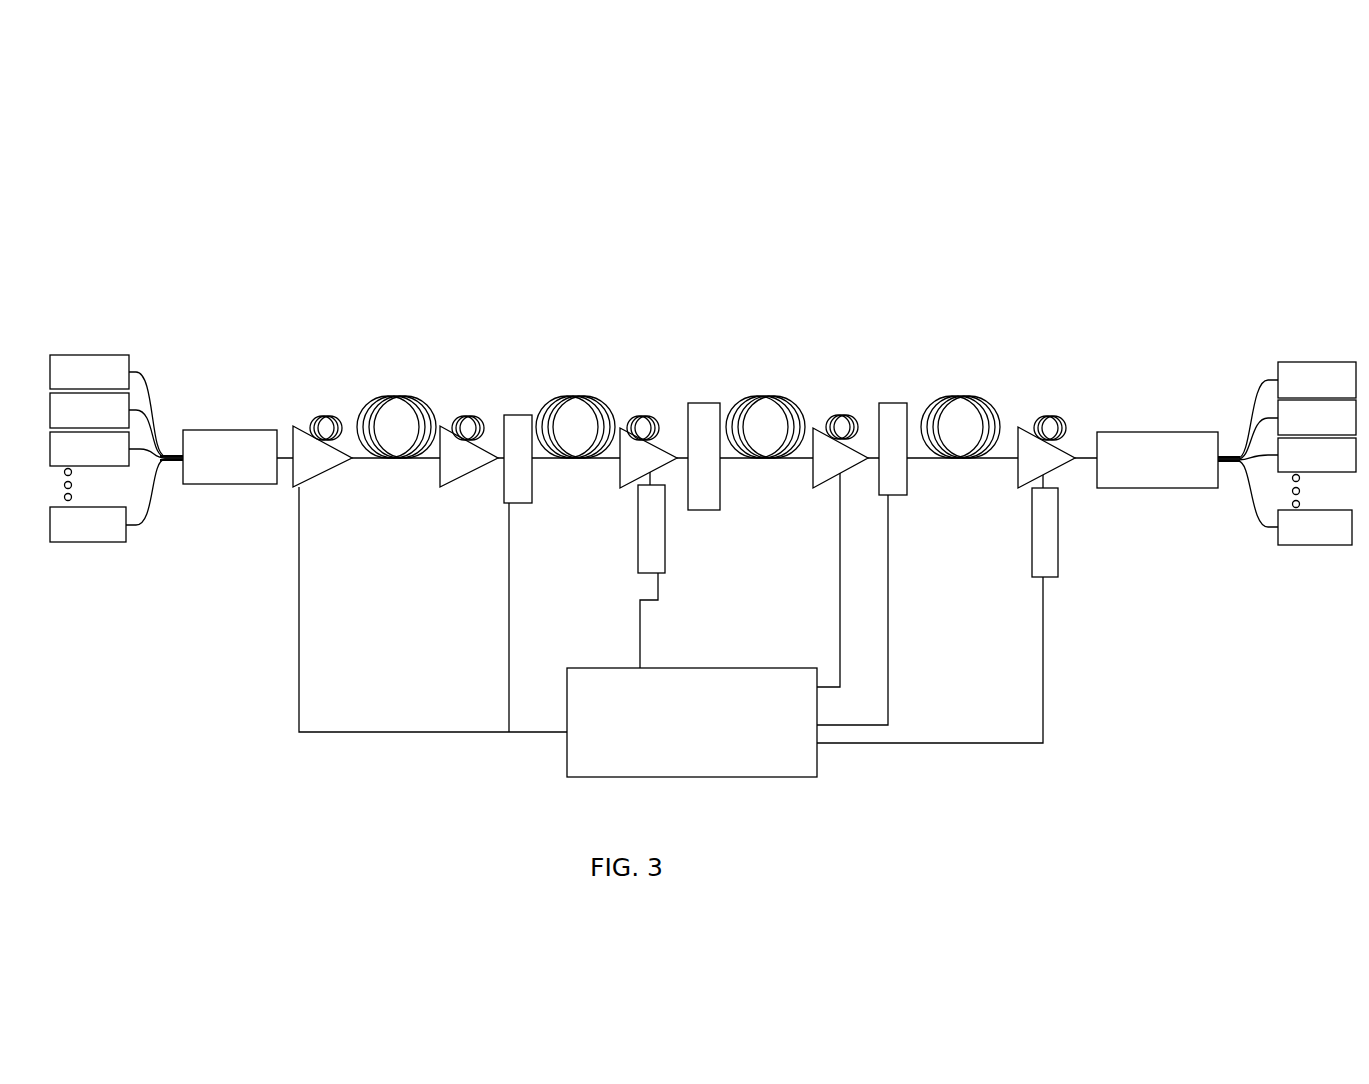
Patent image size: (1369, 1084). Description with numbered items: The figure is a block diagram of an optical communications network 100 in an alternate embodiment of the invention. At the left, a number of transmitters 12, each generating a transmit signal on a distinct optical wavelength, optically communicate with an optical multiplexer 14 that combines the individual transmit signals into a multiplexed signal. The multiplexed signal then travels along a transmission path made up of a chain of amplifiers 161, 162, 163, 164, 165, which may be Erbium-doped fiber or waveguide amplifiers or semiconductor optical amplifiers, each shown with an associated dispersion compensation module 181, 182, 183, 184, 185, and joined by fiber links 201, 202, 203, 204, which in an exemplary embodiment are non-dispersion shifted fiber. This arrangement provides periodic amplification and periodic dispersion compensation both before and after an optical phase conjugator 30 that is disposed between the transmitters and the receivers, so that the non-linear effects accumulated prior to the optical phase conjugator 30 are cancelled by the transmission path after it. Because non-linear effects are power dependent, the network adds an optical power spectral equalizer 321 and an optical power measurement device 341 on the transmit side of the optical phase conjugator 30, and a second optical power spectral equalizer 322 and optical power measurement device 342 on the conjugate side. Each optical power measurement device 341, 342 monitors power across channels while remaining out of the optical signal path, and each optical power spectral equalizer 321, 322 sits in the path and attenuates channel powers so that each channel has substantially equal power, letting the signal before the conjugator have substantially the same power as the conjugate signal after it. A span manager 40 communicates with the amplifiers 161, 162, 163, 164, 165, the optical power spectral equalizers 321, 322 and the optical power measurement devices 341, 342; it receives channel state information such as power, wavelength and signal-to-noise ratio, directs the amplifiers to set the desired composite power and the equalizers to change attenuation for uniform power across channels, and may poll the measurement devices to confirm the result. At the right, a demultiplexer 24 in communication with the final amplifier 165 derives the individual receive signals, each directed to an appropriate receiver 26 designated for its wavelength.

The optical communications network 100 is at (629, 212).
The transmitters 12 is at (93, 542).
The optical multiplexer 14 is at (203, 484).
The amplifier 161 is at (312, 478).
The amplifier 162 is at (443, 487).
The amplifier 163 is at (623, 490).
The amplifier 164 is at (815, 490).
The amplifier 165 is at (1019, 488).
The dispersion compensation module 181 is at (328, 418).
The dispersion compensation module 182 is at (488, 422).
The dispersion compensation module 183 is at (662, 424).
The dispersion compensation module 184 is at (858, 412).
The dispersion compensation module 185 is at (1068, 422).
The fiber link 201 is at (413, 397).
The fiber link 202 is at (596, 396).
The fiber link 203 is at (790, 397).
The fiber link 204 is at (980, 396).
The demultiplexer 24 is at (1173, 430).
The receivers 26 is at (1317, 360).
The optical phase conjugator 30 is at (707, 402).
The optical power spectral equalizer 321 is at (524, 503).
The optical power spectral equalizer 322 is at (893, 400).
The optical power measurement device 341 is at (666, 545).
The optical power measurement device 342 is at (1058, 545).
The span manager 40 is at (567, 760).